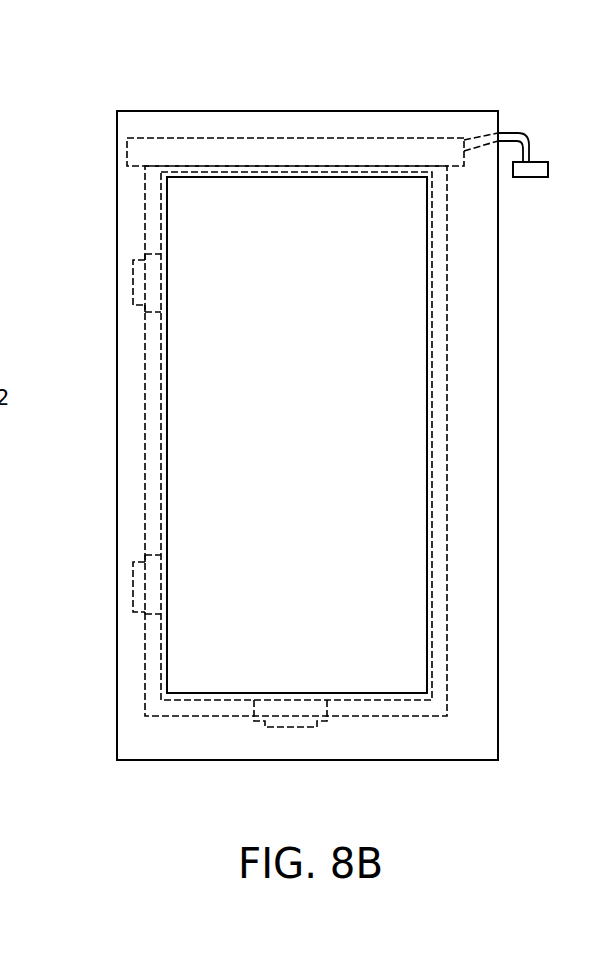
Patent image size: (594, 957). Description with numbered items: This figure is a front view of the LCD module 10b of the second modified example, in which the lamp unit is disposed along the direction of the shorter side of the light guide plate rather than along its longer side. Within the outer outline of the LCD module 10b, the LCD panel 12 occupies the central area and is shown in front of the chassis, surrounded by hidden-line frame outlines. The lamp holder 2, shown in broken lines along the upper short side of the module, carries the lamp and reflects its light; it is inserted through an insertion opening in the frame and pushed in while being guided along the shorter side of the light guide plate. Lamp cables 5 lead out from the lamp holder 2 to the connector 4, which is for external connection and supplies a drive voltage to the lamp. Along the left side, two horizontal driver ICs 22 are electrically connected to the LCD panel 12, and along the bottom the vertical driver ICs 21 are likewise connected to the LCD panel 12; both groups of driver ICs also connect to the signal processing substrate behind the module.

The LCD module 10b is at (546, 805).
The LCD panel 12 is at (378, 701).
The lamp holder 2 is at (282, 138).
The horizontal driver ICs 22 is at (135, 282).
The vertical driver ICs 21 is at (295, 728).
The lamp cables 5 is at (508, 133).
The connector 4 is at (537, 165).